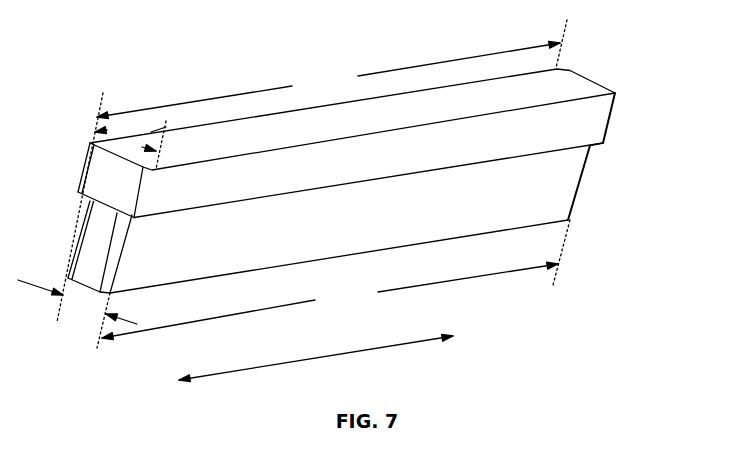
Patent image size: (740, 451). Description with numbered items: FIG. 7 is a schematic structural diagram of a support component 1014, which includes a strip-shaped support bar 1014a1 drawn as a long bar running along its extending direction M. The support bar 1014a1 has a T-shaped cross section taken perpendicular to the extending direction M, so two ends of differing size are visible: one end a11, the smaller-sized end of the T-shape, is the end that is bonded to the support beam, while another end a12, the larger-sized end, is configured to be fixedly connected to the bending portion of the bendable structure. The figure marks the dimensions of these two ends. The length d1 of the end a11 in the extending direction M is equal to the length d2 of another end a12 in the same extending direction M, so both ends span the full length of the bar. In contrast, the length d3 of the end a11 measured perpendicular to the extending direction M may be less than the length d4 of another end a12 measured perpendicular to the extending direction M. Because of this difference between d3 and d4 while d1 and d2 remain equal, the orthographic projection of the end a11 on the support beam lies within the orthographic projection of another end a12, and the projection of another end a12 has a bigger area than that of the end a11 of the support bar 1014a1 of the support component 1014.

The support component 1014 is at (378, 159).
The another end of the support bar a12 is at (566, 89).
The support bar 1014a1 is at (535, 192).
The end of the support bar a11 is at (535, 227).
The length of the end a11 in the extending direction d1 is at (330, 300).
The length of the end a12 in the extending direction d2 is at (328, 79).
The length of the end a11 perpendicular to the extending direction d3 is at (77, 302).
The length of the end a12 perpendicular to the extending direction d4 is at (125, 138).
The extending direction of the support bar M is at (330, 352).